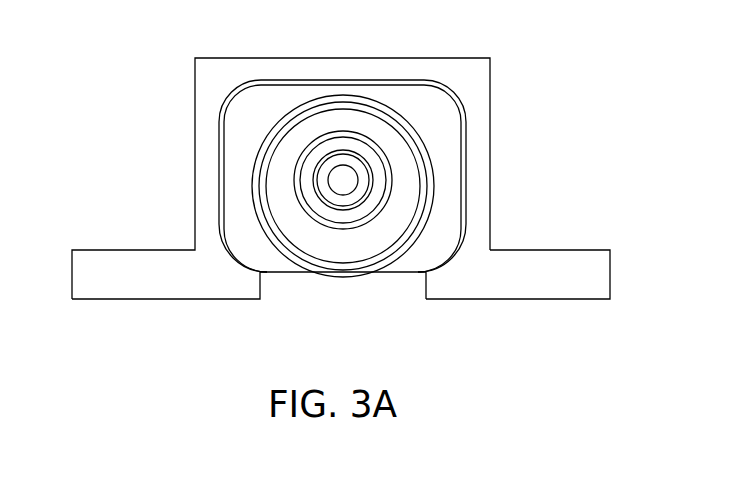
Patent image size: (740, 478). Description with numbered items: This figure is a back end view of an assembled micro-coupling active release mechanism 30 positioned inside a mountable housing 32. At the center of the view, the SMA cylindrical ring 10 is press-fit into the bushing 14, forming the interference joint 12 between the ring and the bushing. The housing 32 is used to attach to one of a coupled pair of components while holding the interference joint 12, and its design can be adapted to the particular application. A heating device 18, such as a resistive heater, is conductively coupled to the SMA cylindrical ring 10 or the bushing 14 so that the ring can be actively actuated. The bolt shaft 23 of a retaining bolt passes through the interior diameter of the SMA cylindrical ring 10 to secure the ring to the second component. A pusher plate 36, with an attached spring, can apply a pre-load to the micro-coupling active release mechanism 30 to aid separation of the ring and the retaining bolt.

The SMA cylindrical ring 10 is at (311, 151).
The interference joint 12 is at (343, 131).
The bushing 14 is at (395, 148).
The heating device 18 is at (320, 257).
The bolt shaft 23 is at (345, 188).
The micro-coupling active release mechanism 30 is at (508, 132).
The housing 32 is at (571, 258).
The pusher plate 36 is at (229, 182).